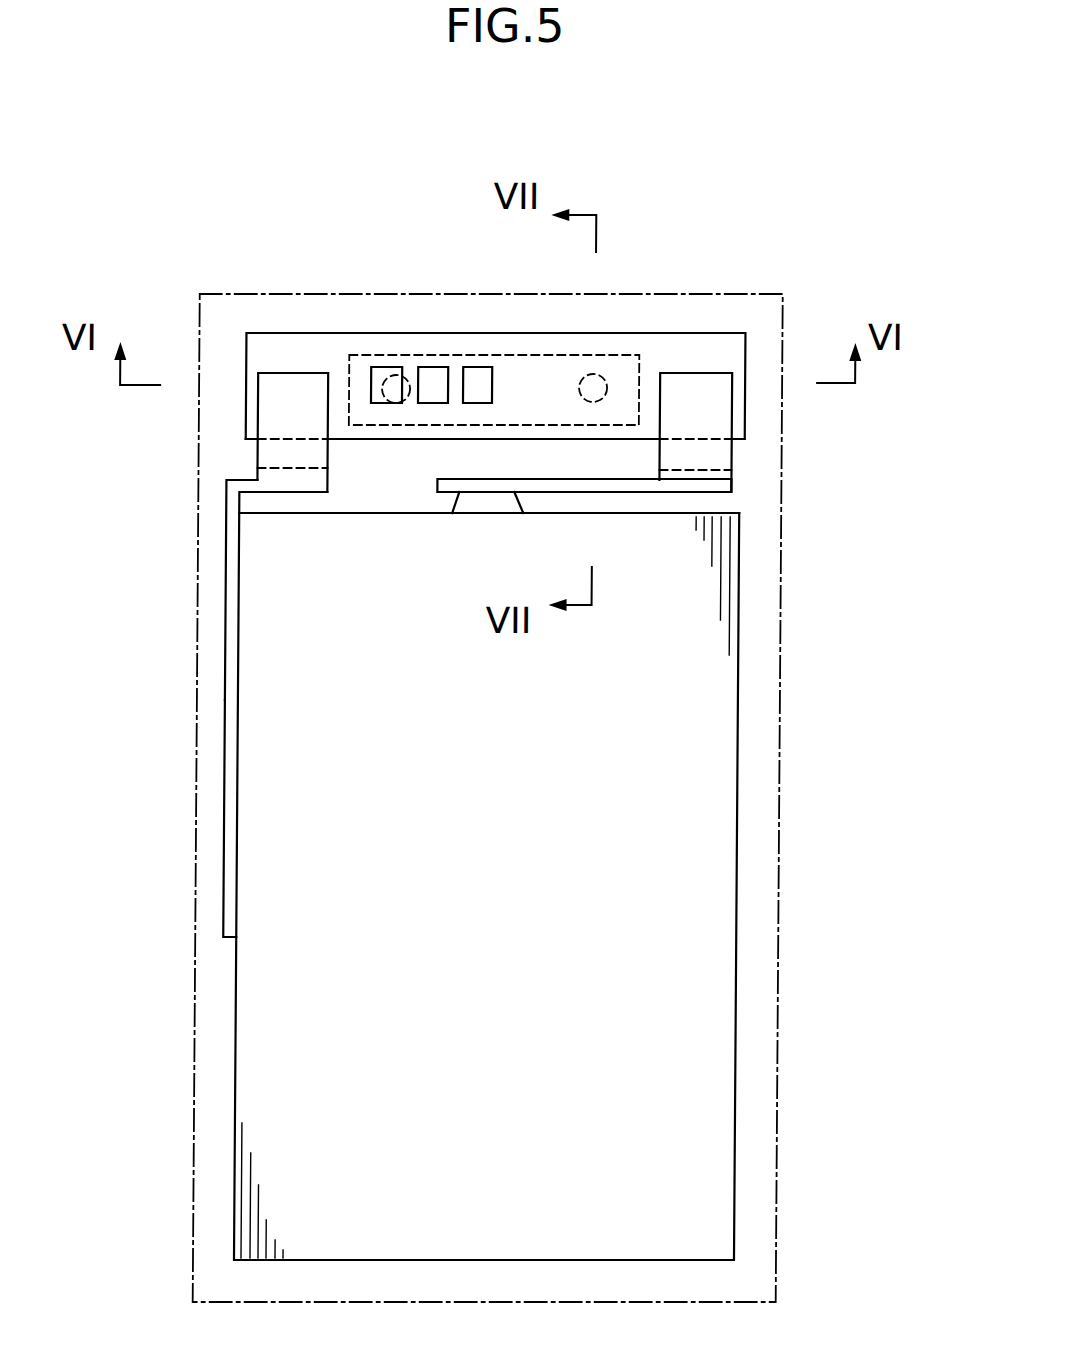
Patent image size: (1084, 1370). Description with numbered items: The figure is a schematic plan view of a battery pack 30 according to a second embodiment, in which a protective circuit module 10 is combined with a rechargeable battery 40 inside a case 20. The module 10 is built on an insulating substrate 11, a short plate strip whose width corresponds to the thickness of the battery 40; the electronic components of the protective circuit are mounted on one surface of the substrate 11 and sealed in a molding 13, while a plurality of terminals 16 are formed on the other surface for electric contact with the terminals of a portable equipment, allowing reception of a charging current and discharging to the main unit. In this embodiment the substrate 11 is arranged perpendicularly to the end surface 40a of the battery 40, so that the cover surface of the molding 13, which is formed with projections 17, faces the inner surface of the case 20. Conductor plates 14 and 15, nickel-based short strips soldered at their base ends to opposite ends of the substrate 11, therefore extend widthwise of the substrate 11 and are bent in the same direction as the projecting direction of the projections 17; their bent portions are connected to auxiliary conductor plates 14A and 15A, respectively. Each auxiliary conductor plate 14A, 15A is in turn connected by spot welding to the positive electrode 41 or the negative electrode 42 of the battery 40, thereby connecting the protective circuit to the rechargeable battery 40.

The protective circuit module 10 is at (684, 343).
The insulating substrate 11 is at (305, 343).
The molding 13 is at (397, 425).
The conductor plate 14 is at (702, 398).
The auxiliary conductor plate 14A is at (703, 493).
The conductor plate 15 is at (276, 413).
The auxiliary conductor plate 15A is at (230, 533).
The terminals 16 is at (473, 375).
The projections 17 is at (603, 374).
The case 20 is at (780, 660).
The battery pack 30 is at (818, 465).
The rechargeable battery 40 is at (716, 797).
The end surface 40a is at (632, 512).
The positive electrode 41 is at (484, 503).
The negative electrode 42 is at (237, 712).